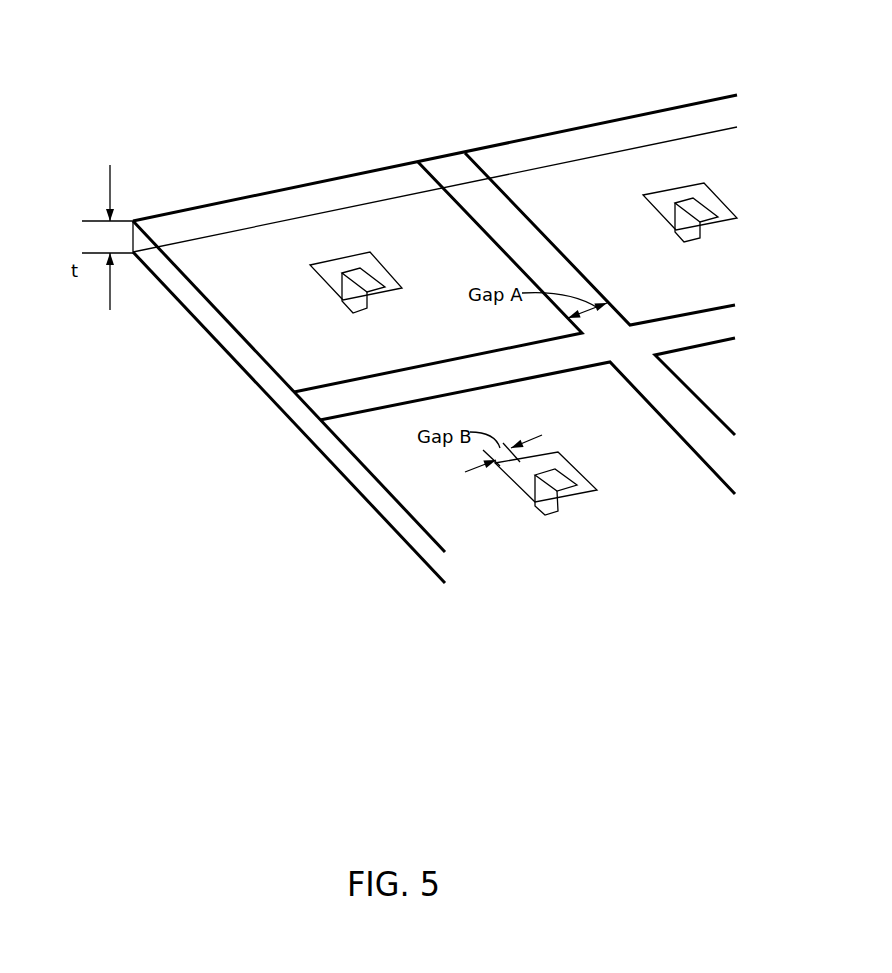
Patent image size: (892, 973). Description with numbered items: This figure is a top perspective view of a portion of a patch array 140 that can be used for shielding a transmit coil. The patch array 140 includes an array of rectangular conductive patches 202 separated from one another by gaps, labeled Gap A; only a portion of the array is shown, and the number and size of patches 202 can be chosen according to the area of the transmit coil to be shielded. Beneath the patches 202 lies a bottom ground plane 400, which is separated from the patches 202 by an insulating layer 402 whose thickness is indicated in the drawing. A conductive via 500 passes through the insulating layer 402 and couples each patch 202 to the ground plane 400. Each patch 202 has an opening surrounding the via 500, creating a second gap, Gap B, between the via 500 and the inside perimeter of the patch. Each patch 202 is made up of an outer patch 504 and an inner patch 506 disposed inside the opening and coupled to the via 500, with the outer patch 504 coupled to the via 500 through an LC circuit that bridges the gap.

The patch array 140 is at (505, 63).
The rectangular conductive patch 202 is at (277, 187).
The bottom ground plane 400 is at (325, 457).
The insulating layer 402 is at (197, 303).
The outer patch 504 is at (252, 247).
The inner patch 506 is at (358, 277).
The conductive via 500 is at (570, 475).